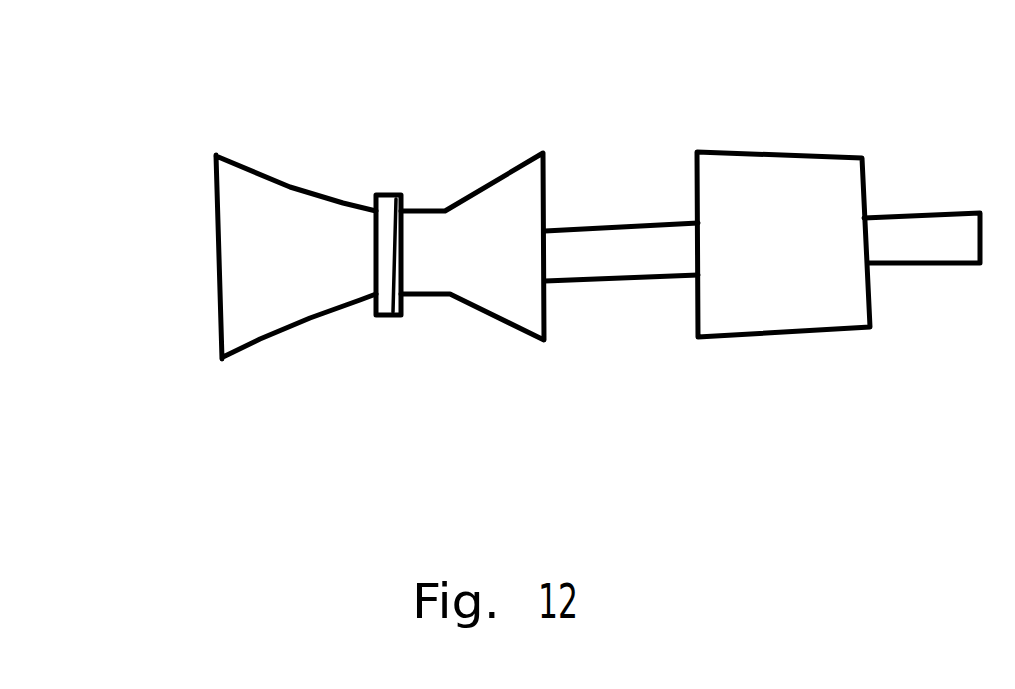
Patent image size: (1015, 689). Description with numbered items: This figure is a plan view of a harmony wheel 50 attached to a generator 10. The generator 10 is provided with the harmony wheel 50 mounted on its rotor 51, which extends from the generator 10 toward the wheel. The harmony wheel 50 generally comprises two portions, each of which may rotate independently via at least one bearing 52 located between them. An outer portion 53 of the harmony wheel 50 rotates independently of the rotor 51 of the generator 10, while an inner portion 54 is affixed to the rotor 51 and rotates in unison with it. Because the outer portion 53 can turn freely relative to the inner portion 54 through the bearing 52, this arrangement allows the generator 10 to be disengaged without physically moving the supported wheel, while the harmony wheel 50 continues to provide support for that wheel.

The harmony wheel 50 is at (153, 90).
The rotor 51 is at (627, 178).
The bearing 52 is at (392, 328).
The outer portion 53 is at (258, 362).
The inner portion 54 is at (515, 352).
The generator 10 is at (803, 298).